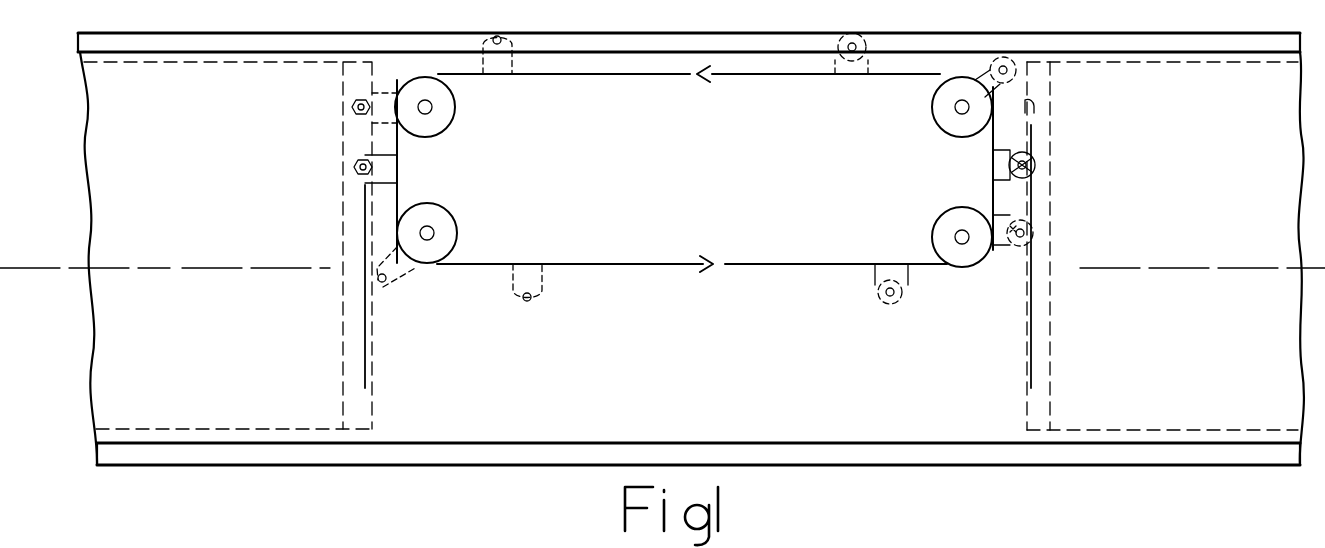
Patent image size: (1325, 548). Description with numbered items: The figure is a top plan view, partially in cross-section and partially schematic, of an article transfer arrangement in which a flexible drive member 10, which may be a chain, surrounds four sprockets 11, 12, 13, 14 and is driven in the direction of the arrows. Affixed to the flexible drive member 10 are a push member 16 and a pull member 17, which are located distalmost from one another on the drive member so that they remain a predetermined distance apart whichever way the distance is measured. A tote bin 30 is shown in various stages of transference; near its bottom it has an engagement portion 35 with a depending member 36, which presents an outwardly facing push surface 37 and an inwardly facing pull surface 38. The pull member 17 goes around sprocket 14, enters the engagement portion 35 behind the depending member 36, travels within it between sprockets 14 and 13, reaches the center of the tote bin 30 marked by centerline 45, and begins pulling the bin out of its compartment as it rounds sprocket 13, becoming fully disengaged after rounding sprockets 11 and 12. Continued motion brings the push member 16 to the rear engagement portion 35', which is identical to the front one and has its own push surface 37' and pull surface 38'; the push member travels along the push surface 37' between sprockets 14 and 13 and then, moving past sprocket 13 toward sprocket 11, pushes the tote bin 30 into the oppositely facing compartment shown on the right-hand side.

The flexible drive member 10 is at (649, 76).
The sprocket 11 is at (945, 215).
The sprocket 12 is at (945, 118).
The sprocket 13 is at (447, 240).
The sprocket 14 is at (440, 113).
The push member 16 is at (990, 165).
The pull member 17 is at (385, 173).
The tote bin 30 is at (283, 60).
The engagement portion 35 is at (381, 218).
The engagement portion 35' is at (1060, 246).
The depending member 36 is at (1030, 300).
The push surface 37 is at (392, 287).
The push surface 37' is at (1003, 267).
The pull surface 38 is at (336, 175).
The pull surface 38' is at (1068, 175).
The centerline 45 is at (45, 268).